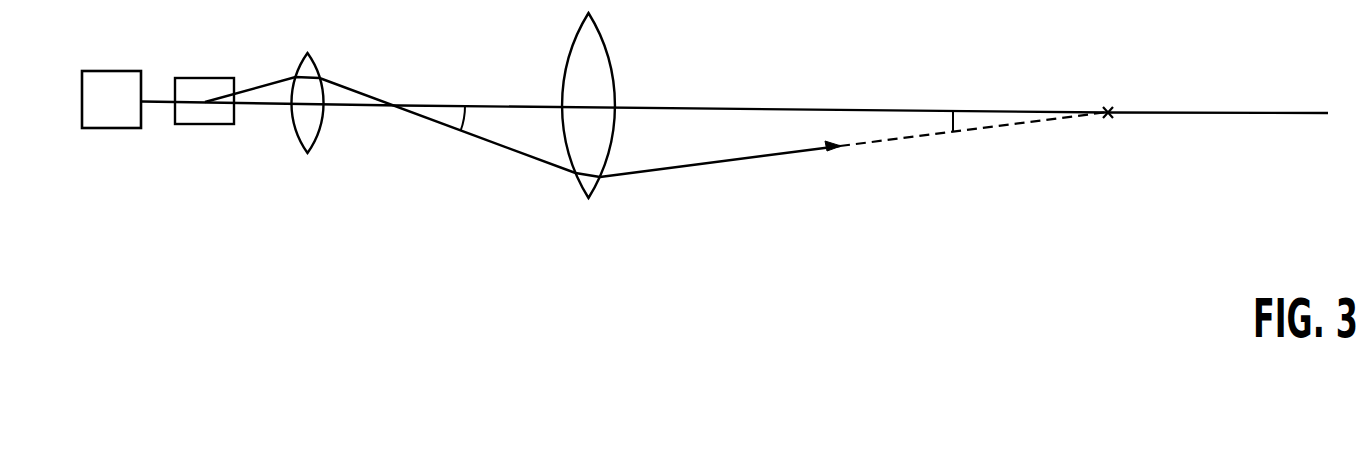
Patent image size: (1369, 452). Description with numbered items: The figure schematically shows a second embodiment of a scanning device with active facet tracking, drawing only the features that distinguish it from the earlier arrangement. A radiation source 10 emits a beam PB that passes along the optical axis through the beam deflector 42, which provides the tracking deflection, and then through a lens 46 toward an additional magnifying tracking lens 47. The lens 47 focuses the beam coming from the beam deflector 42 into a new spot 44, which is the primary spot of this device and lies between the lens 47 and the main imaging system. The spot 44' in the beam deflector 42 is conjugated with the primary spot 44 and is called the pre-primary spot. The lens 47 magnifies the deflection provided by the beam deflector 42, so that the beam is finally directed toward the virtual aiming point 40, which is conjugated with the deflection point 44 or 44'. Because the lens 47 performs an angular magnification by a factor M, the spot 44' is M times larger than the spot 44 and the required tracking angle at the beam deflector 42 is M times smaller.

The radiation source 10 is at (110, 116).
The beam deflector 42 is at (198, 116).
The pre-primary spot 44' is at (258, 60).
The primary spot 44 is at (448, 96).
The first lens 46 is at (310, 130).
The magnifying tracking lens 47 is at (590, 198).
The virtual aiming point 40 is at (1108, 108).
The projection beam / optical axis PB is at (267, 95).